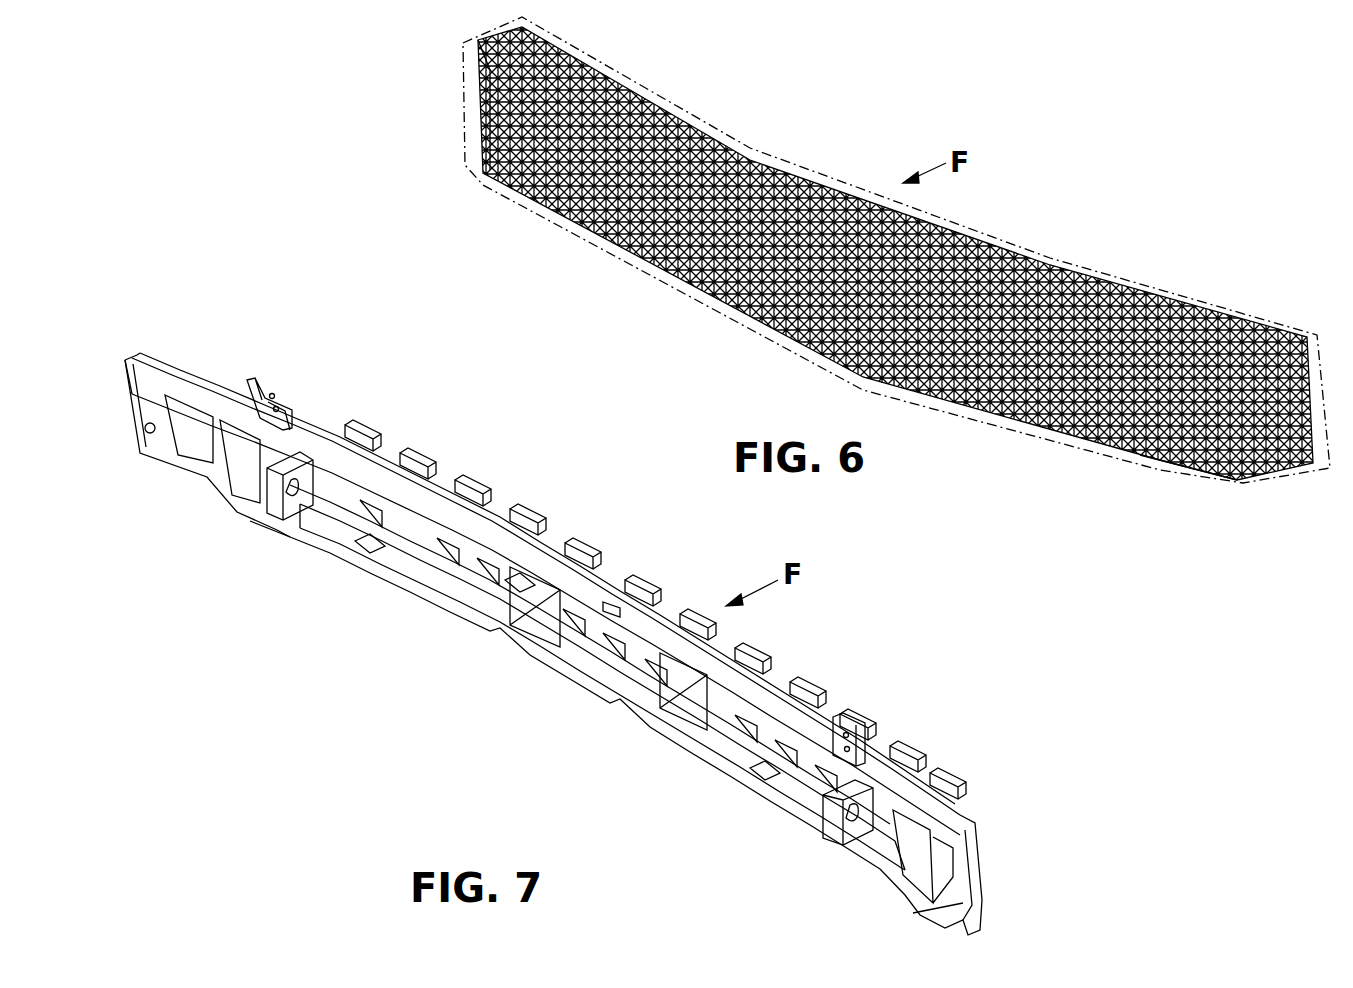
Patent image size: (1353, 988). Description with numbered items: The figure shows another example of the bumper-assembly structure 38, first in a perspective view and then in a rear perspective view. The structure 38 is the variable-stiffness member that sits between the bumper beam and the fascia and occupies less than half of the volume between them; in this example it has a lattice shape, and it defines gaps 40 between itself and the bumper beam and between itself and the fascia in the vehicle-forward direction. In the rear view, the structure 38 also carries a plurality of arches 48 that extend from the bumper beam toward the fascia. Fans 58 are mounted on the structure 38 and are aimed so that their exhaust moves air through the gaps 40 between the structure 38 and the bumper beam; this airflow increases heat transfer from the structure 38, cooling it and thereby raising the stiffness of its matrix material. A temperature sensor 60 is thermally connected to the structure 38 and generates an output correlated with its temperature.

In FIG. 6, the structure 38 is at (797, 128).
In FIG. 7, the structure 38 is at (534, 655).
In FIG. 6, the gaps 40 is at (1196, 458).
In FIG. 7, the gaps 40 is at (743, 748).
In FIG. 7, the arches 48 is at (543, 527).
In FIG. 7, the fans 58 is at (285, 508).
In FIG. 7, the temperature sensor 60 is at (610, 598).